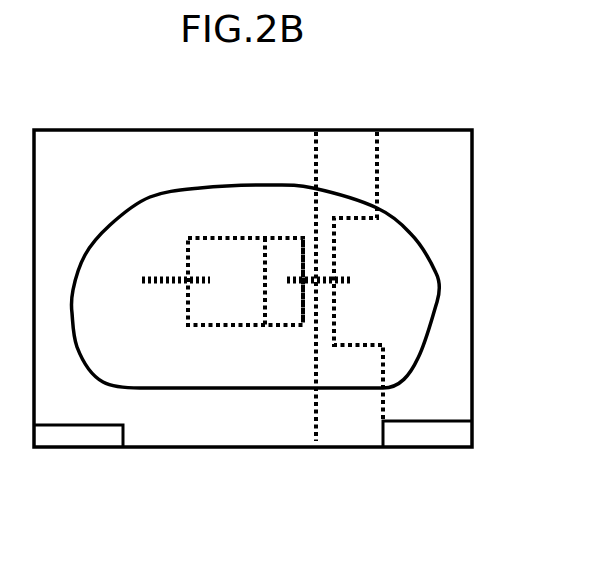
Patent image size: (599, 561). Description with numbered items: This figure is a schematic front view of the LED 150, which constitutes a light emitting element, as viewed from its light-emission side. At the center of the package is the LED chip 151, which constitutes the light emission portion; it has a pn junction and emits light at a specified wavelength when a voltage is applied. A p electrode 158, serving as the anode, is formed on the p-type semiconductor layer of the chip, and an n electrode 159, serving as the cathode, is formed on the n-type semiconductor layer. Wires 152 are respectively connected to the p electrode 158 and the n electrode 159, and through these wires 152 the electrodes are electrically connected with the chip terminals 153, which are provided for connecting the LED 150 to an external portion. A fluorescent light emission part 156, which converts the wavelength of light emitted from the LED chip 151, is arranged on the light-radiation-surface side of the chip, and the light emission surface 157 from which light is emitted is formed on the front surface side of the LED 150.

The LED 150 is at (258, 455).
The LED chip 151 is at (245, 248).
The wires 152 is at (330, 272).
The chip terminals 153 is at (107, 435).
The fluorescent light emission part 156 is at (157, 220).
The light emission surface 157 is at (377, 300).
The p electrode 158 is at (292, 245).
The n electrode 159 is at (202, 258).